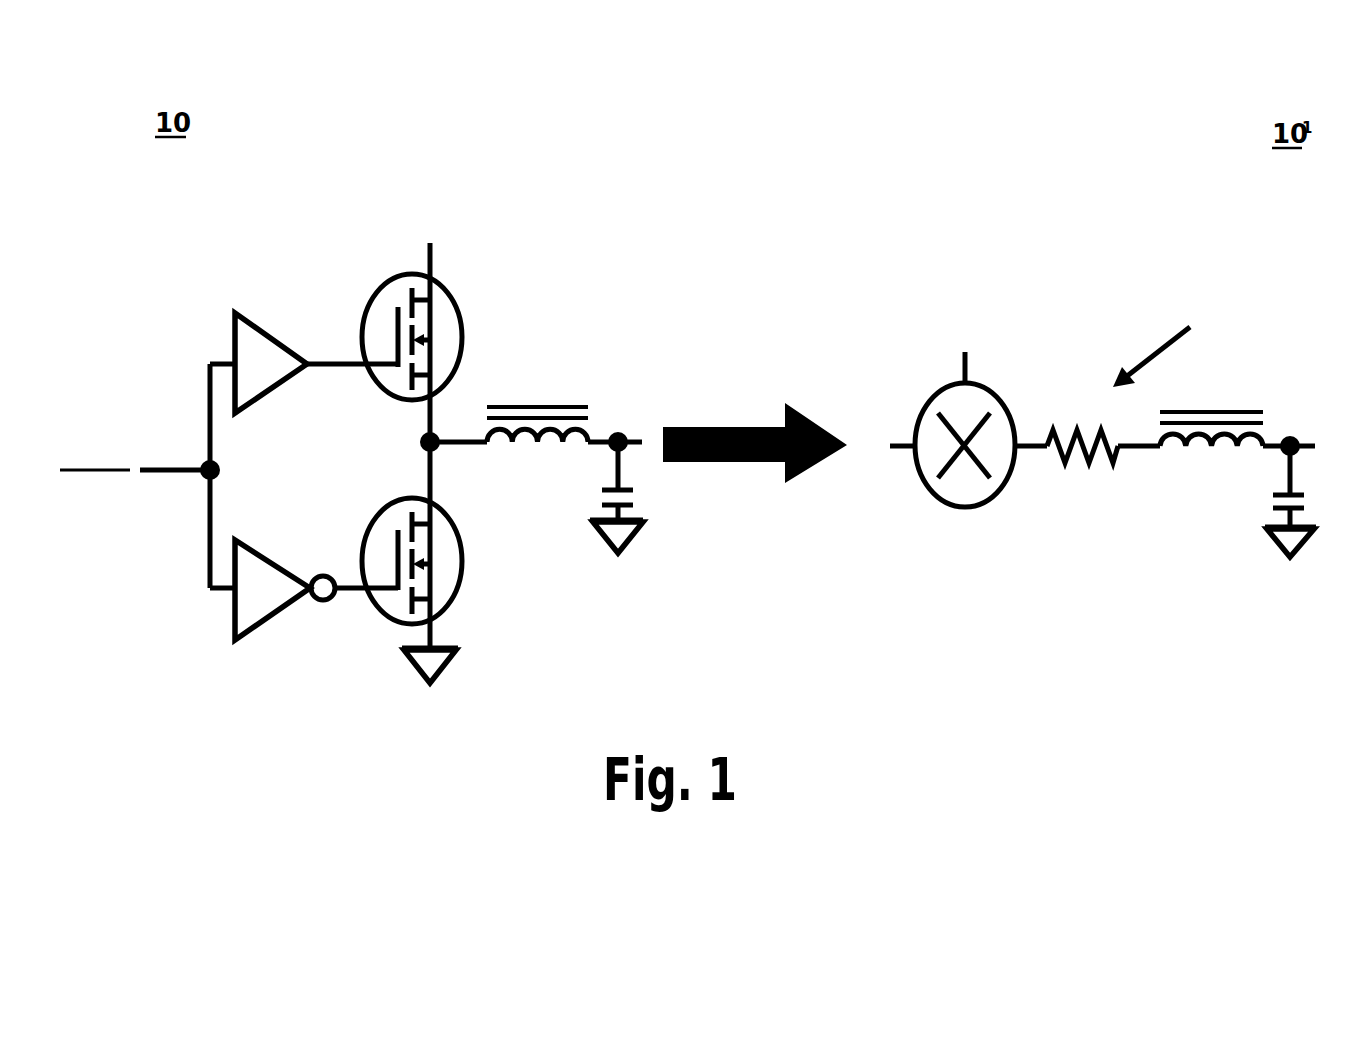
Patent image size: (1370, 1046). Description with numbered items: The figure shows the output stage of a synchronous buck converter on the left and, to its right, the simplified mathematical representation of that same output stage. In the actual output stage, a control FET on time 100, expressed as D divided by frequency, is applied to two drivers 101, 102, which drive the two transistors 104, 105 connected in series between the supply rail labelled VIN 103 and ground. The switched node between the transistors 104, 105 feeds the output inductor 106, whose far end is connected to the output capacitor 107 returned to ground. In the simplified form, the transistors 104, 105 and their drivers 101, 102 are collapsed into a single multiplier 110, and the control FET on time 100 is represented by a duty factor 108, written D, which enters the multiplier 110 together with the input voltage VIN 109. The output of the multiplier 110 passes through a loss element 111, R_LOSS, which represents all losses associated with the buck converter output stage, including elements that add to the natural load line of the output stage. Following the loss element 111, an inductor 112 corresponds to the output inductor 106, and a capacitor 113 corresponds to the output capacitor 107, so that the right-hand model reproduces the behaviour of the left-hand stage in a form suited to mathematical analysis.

The control FET on time 100 is at (136, 476).
The driver 101 is at (304, 360).
The driver 102 is at (304, 592).
The input voltage supply VIN 103 is at (458, 235).
The transistor 104 is at (438, 358).
The transistor 105 is at (438, 562).
The output inductor 106 is at (536, 443).
The output capacitor 107 is at (637, 492).
The duty factor 108 is at (886, 464).
The input voltage VIN 109 is at (962, 331).
The multiplier 110 is at (975, 455).
The loss element 111 is at (1186, 362).
The inductor 112 is at (1237, 448).
The capacitor 113 is at (1311, 496).